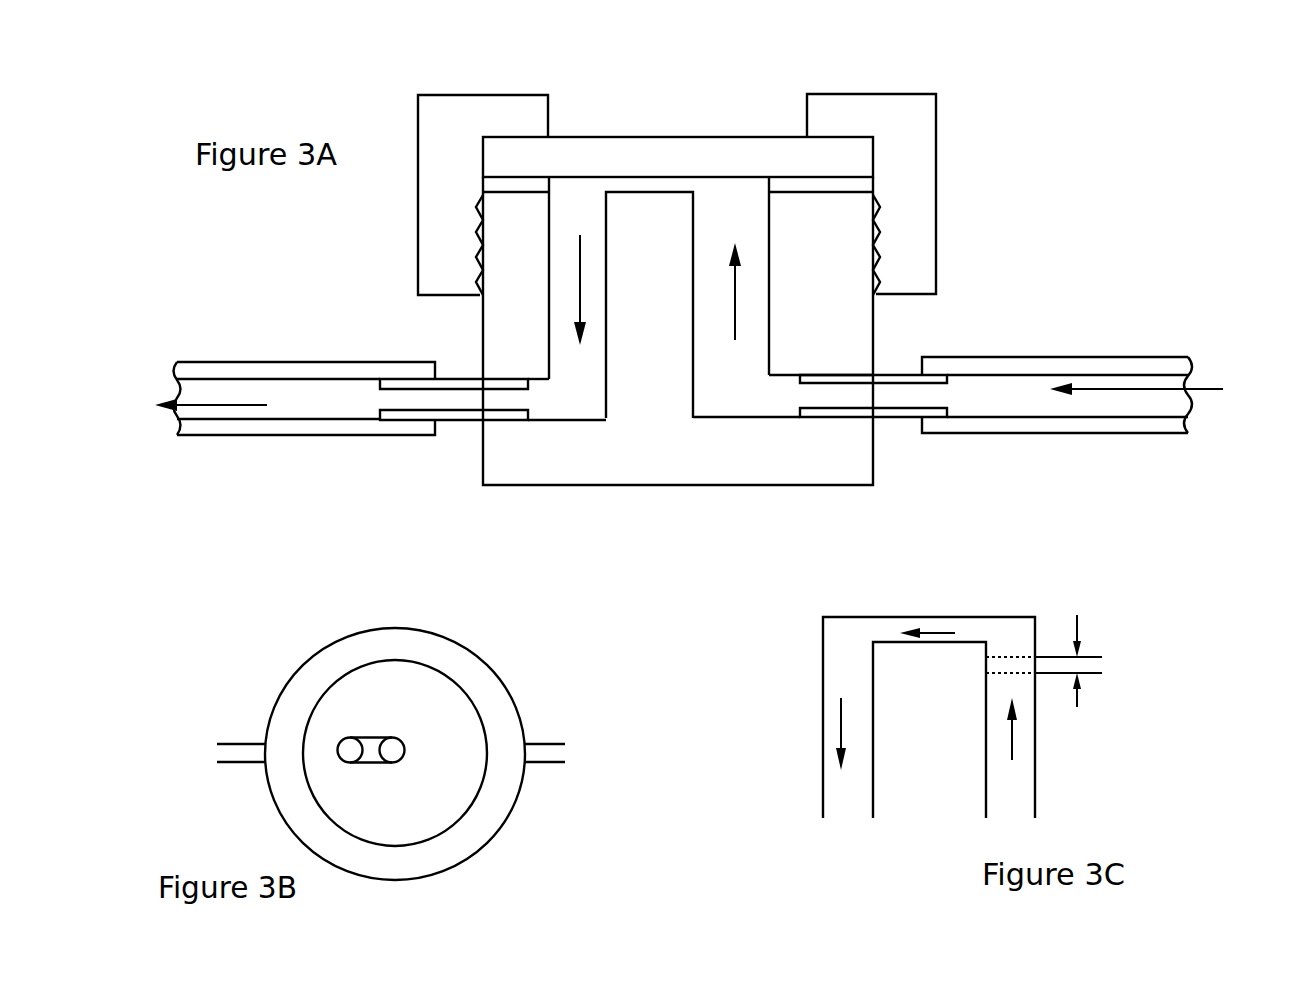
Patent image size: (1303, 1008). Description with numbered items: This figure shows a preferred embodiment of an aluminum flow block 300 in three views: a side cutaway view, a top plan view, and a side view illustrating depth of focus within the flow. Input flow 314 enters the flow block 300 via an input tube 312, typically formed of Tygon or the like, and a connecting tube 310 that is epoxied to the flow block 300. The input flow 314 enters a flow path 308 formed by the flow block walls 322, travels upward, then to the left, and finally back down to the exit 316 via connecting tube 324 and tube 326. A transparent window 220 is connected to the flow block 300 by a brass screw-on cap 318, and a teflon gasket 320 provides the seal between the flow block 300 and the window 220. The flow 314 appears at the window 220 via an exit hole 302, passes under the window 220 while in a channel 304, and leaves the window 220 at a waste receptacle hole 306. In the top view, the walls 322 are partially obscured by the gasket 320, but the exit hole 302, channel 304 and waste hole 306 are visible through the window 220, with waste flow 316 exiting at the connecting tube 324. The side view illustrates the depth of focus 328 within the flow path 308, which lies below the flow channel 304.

In FIG. 3A, the transparent window 220 is at (710, 135).
In FIG. 3B, the transparent window 220 is at (428, 803).
In FIG. 3A, the flow block 300 is at (366, 288).
In FIG. 3A, the exit hole 302 is at (735, 183).
In FIG. 3B, the exit hole 302 is at (397, 740).
In FIG. 3A, the channel 304 is at (662, 183).
In FIG. 3B, the channel 304 is at (370, 740).
In FIG. 3A, the waste receptacle hole 306 is at (565, 183).
In FIG. 3B, the waste receptacle hole 306 is at (355, 740).
In FIG. 3A, the flow path 308 is at (735, 393).
In FIG. 3C, the flow path 308 is at (1020, 783).
In FIG. 3A, the connecting tube 310 is at (898, 418).
In FIG. 3B, the connecting tube 310 is at (540, 742).
In FIG. 3A, the input tube 312 is at (1027, 435).
In FIG. 3A, the input flow 314 is at (1159, 392).
In FIG. 3A, the exit 316 is at (190, 405).
In FIG. 3A, the brass screw-on cap 318 is at (936, 148).
In FIG. 3B, the brass screw-on cap 318 is at (477, 670).
In FIG. 3A, the teflon gasket 320 is at (873, 183).
In FIG. 3B, the teflon gasket 320 is at (452, 778).
In FIG. 3A, the flow block walls 322 is at (777, 352).
In FIG. 3A, the connecting tube 324 is at (460, 422).
In FIG. 3B, the connecting tube 324 is at (242, 742).
In FIG. 3A, the tube 326 is at (305, 437).
In FIG. 3C, the depth of focus 328 is at (1110, 667).